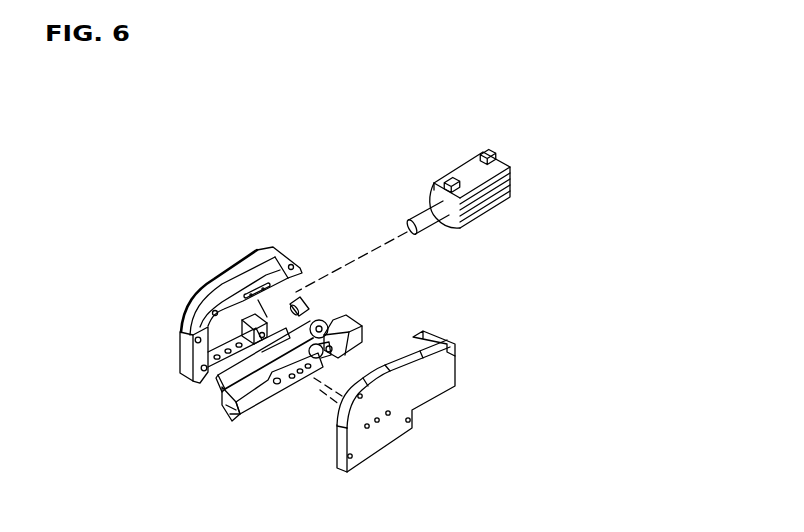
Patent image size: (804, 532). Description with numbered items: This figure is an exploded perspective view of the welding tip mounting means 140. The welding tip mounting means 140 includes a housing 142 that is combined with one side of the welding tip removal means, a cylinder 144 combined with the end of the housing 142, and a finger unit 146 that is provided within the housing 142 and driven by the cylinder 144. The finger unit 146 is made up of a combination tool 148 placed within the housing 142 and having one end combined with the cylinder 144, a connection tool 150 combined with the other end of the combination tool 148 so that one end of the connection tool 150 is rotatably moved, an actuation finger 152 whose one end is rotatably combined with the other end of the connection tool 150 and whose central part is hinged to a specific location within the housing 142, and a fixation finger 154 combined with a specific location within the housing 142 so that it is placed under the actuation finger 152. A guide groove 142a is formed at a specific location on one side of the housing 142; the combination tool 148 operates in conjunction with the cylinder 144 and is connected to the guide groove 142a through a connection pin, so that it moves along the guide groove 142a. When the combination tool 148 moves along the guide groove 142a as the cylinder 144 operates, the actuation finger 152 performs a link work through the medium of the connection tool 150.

The welding tip mounting means 140 is at (159, 235).
The housing 142 is at (236, 270).
The guide groove 142a is at (183, 333).
The cylinder 144 is at (491, 210).
The finger unit 146 is at (268, 424).
The combination tool 148 is at (350, 315).
The connection tool 150 is at (308, 318).
The actuation finger 152 is at (226, 392).
The fixation finger 154 is at (240, 411).